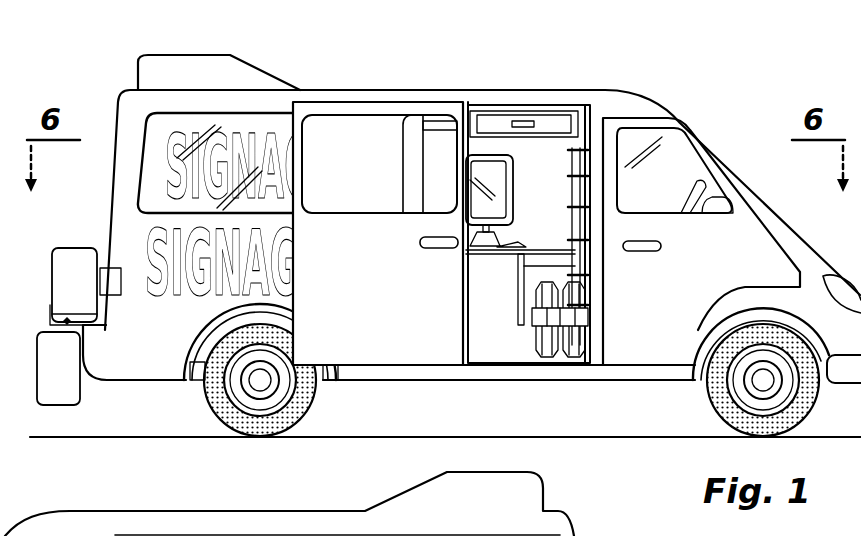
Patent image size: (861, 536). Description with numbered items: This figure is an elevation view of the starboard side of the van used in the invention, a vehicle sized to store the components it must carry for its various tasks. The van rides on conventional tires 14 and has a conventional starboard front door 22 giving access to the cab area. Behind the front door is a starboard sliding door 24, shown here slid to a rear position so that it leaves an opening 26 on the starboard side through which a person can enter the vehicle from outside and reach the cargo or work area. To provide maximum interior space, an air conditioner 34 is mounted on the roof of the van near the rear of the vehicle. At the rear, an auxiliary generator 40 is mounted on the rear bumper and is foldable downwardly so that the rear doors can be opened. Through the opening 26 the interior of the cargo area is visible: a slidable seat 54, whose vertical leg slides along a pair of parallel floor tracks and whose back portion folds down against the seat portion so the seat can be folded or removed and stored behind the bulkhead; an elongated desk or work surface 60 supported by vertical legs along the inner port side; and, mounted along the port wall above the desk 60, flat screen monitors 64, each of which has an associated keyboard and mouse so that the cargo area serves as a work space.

The tires 14 is at (213, 400).
The starboard front door 22 is at (628, 342).
The starboard sliding door 24 is at (382, 350).
The opening 26 is at (537, 177).
The air conditioner 34 is at (233, 75).
The auxiliary generator 40 is at (70, 258).
The slidable seat 54 is at (541, 357).
The desk or work surface 60 is at (488, 257).
The flat screen monitors 64 is at (485, 208).